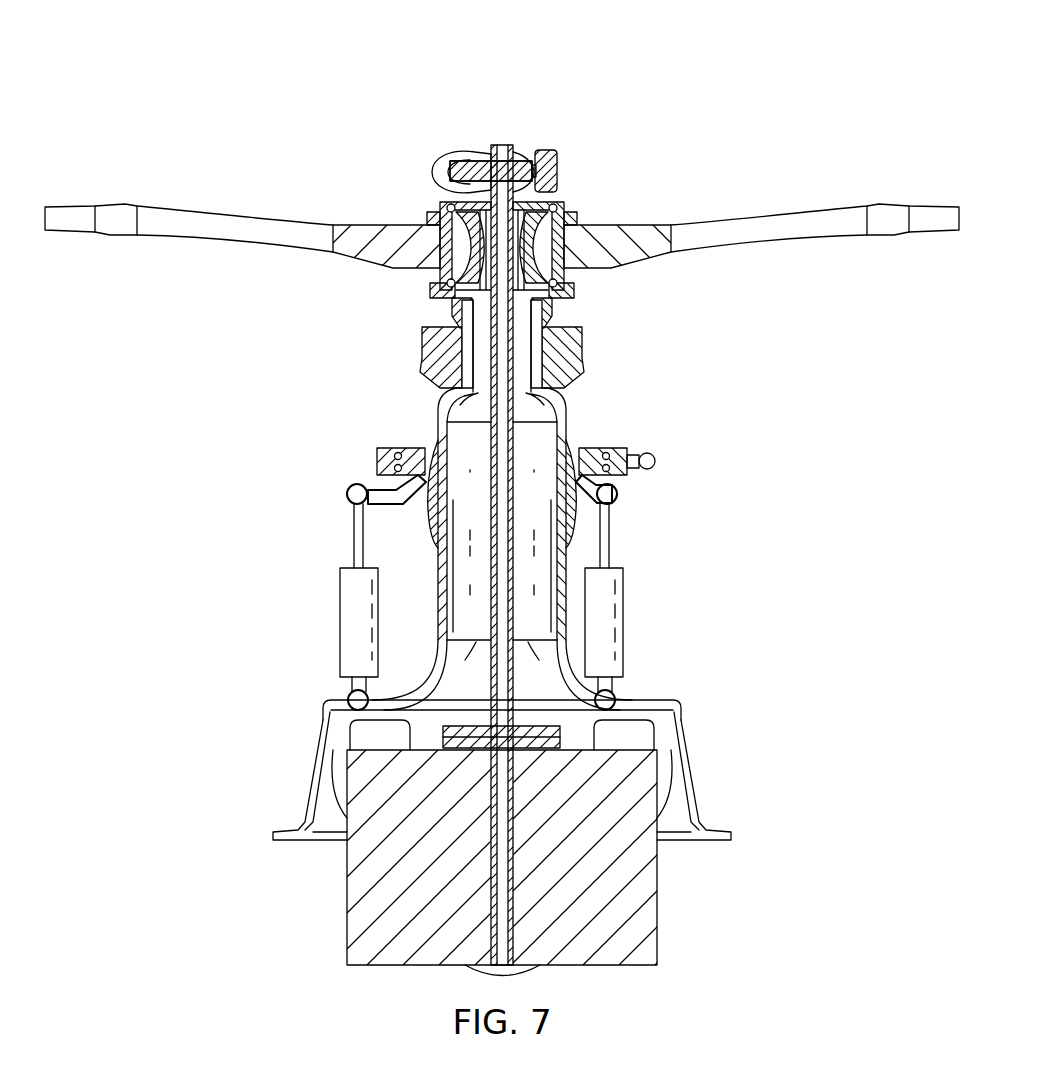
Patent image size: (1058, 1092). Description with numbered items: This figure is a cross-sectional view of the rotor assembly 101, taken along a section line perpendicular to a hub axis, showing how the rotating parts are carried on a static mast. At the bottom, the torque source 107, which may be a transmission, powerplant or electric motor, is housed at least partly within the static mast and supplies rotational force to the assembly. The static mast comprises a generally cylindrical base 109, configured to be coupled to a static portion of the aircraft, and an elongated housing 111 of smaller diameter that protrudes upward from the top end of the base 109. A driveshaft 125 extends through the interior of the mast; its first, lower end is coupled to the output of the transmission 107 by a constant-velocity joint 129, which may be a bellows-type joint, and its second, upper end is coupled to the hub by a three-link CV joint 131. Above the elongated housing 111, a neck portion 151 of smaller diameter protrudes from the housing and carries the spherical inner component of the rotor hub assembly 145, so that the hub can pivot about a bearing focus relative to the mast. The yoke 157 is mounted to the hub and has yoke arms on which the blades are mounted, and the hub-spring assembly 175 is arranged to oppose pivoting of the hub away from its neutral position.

The rotor assembly 101 is at (346, 80).
The torque source 107 is at (347, 914).
The base 109 is at (316, 766).
The elongated housing 111 is at (438, 414).
The driveshaft 125 is at (501, 146).
The constant-velocity joint 129 is at (562, 748).
The CV joint 131 is at (548, 142).
The rotor hub assembly 145 is at (428, 202).
The neck portion 151 is at (452, 310).
The yoke 157 is at (690, 206).
The hub-spring assembly 175 is at (610, 342).